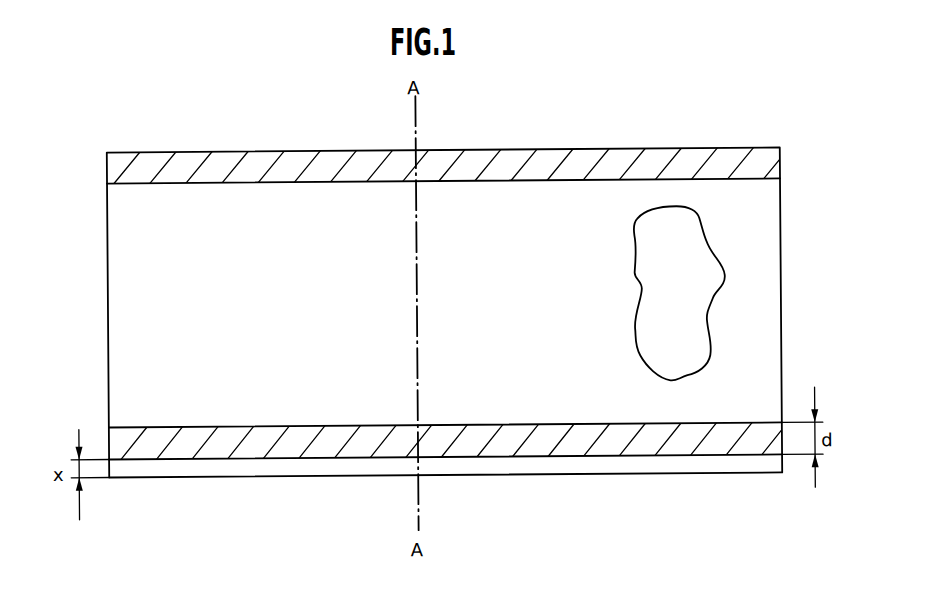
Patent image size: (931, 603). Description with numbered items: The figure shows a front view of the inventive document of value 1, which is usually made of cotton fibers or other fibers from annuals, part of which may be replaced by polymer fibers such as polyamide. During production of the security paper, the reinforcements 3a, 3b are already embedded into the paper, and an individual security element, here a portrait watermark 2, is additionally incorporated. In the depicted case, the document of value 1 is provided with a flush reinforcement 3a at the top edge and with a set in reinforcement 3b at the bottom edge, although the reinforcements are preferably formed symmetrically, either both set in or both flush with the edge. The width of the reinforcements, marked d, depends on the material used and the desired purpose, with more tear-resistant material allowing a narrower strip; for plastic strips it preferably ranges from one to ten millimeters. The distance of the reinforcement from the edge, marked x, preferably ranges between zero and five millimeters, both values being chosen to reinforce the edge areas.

The document of value 1 is at (800, 252).
The portrait watermark 2 is at (693, 302).
The flush reinforcement 3a is at (187, 167).
The set in reinforcement 3b is at (215, 450).